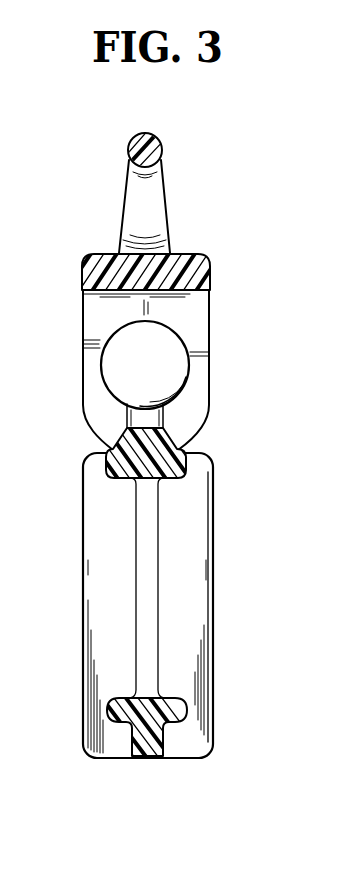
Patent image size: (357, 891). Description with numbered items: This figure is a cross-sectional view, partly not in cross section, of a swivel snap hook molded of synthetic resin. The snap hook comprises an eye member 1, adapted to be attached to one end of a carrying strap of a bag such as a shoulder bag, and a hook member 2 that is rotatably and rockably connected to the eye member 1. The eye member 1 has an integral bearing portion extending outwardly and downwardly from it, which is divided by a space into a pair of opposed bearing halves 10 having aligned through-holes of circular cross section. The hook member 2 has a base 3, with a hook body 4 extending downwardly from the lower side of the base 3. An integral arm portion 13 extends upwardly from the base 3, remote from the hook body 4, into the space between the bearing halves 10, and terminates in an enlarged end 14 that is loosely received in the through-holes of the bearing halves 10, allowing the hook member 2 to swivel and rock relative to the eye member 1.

The eye member 1 is at (176, 185).
The hook member 2 is at (216, 567).
The base 3 is at (168, 468).
The hook body 4 is at (162, 716).
The bearing halves 10 is at (198, 308).
The arm portion 13 is at (165, 417).
The enlarged end 14 is at (118, 361).